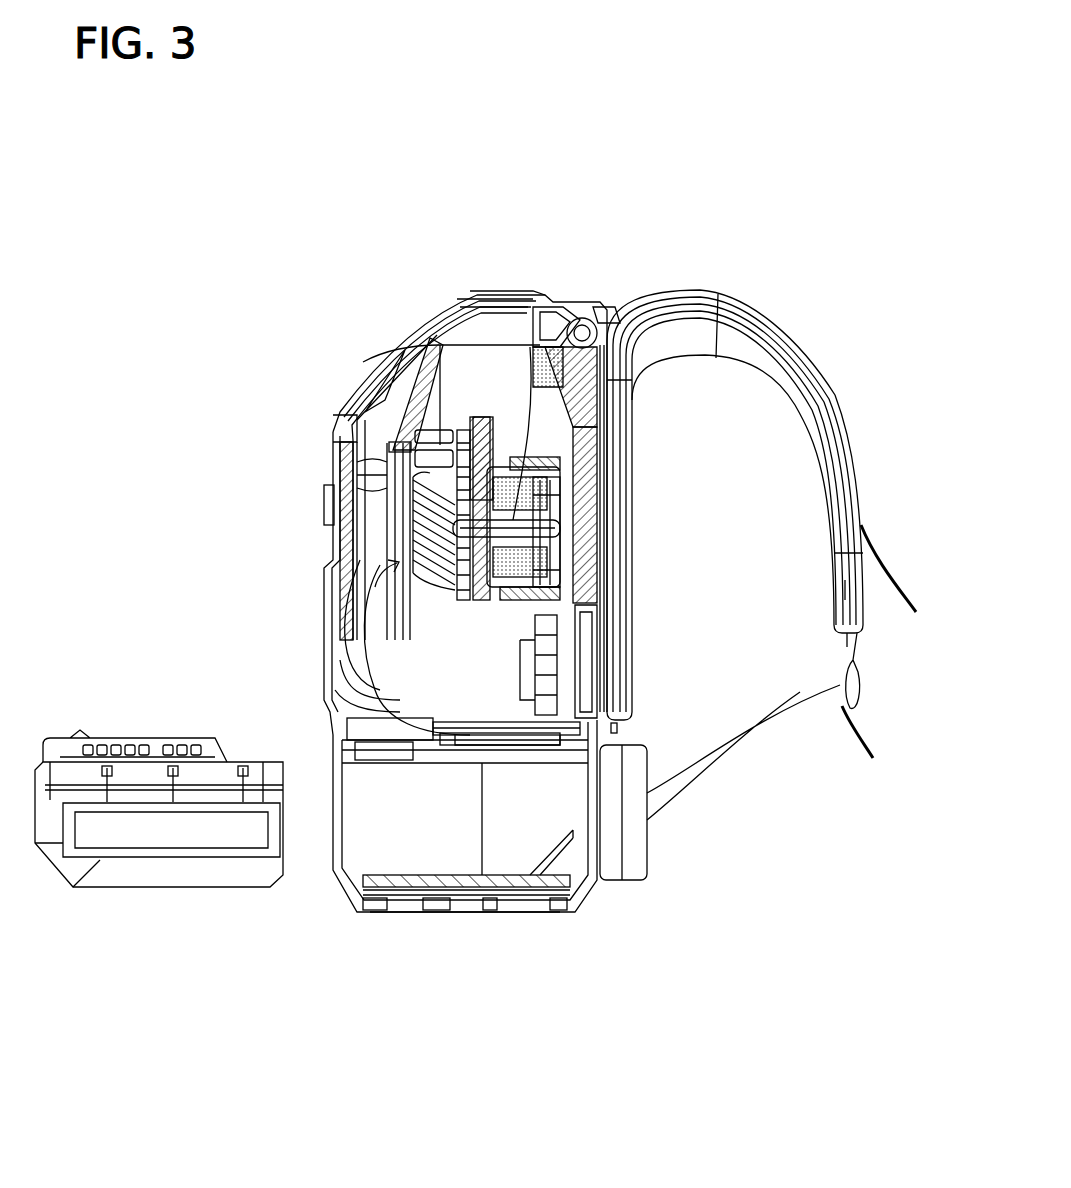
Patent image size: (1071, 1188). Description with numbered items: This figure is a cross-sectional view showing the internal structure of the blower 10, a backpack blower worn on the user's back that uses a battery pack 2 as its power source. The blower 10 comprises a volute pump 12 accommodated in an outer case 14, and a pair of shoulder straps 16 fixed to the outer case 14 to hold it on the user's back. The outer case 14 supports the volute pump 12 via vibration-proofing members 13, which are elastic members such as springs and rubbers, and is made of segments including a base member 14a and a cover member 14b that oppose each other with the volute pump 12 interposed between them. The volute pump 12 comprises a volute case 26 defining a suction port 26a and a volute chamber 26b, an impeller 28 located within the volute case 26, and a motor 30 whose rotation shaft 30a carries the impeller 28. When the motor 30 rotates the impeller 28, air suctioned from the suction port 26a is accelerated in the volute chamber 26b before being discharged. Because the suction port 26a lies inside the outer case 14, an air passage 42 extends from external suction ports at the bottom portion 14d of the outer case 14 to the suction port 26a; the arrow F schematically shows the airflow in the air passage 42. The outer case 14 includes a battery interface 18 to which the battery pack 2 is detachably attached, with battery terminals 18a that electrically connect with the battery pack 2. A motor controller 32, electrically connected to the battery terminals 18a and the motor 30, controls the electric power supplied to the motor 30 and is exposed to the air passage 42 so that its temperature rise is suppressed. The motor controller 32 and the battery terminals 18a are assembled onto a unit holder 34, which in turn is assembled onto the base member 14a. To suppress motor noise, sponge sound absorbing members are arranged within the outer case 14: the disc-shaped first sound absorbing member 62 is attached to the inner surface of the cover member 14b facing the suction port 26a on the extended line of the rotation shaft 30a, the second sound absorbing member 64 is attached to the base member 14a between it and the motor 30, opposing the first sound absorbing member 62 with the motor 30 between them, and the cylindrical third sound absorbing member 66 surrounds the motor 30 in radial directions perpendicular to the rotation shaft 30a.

The blower 10 is at (795, 122).
The volute pump 12 is at (372, 388).
The vibration-proofing member 13 is at (580, 310).
The outer case 14 is at (565, 172).
The base member 14a is at (572, 310).
The cover member 14b is at (440, 315).
The bottom portion 14d is at (664, 914).
The shoulder strap 16 is at (772, 322).
The battery interface 18 is at (403, 868).
The battery terminal 18a is at (378, 763).
The battery pack 2 is at (196, 890).
The volute case 26 is at (378, 360).
The suction port 26a is at (377, 487).
The volute chamber 26b is at (413, 345).
The impeller 28 is at (386, 527).
The motor 30 is at (597, 497).
The rotation shaft 30a is at (600, 532).
The motor controller 32 is at (597, 641).
The unit holder 34 is at (455, 735).
The air passage 42 is at (342, 700).
The first sound absorbing member 62 is at (326, 508).
The second sound absorbing member 64 is at (596, 556).
The third sound absorbing member 66 is at (608, 412).
The airflow F is at (368, 607).